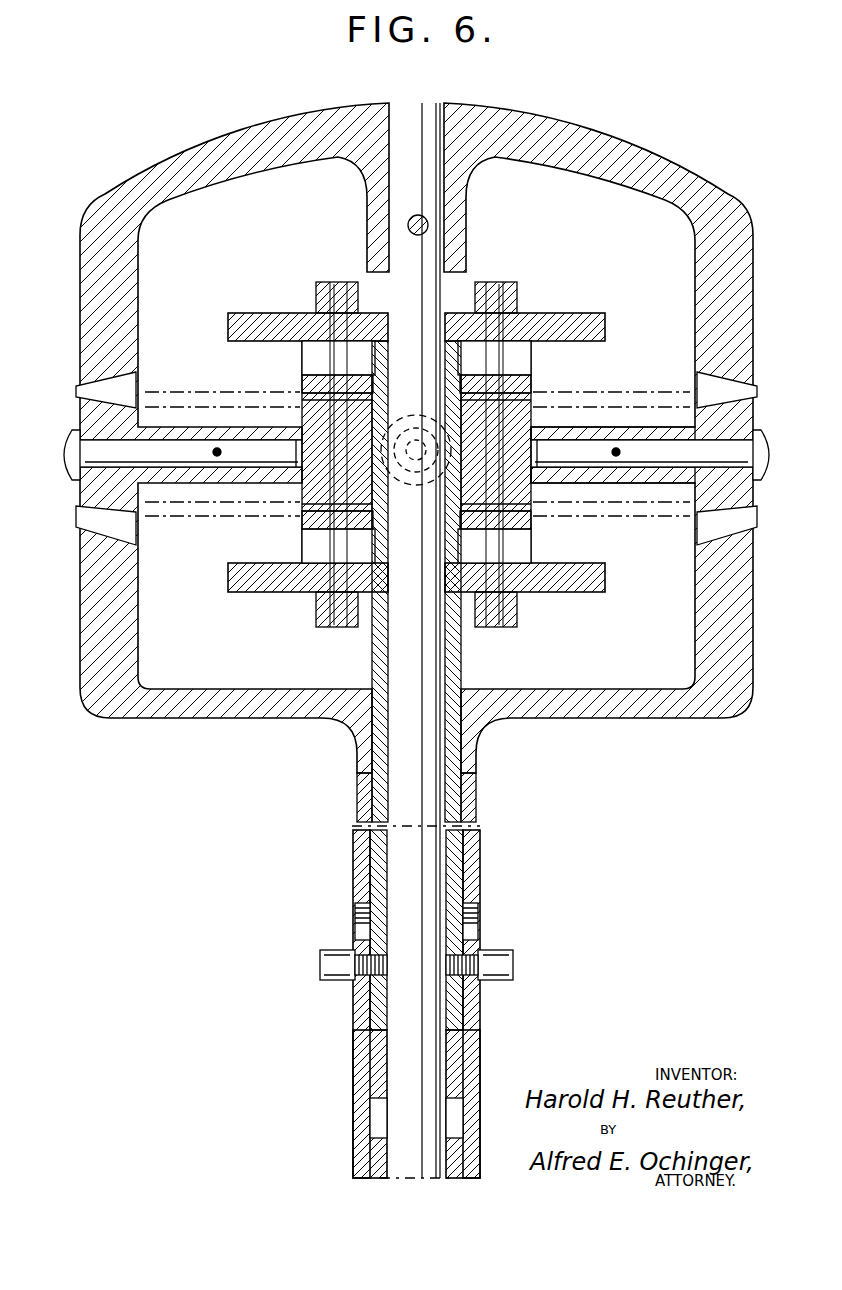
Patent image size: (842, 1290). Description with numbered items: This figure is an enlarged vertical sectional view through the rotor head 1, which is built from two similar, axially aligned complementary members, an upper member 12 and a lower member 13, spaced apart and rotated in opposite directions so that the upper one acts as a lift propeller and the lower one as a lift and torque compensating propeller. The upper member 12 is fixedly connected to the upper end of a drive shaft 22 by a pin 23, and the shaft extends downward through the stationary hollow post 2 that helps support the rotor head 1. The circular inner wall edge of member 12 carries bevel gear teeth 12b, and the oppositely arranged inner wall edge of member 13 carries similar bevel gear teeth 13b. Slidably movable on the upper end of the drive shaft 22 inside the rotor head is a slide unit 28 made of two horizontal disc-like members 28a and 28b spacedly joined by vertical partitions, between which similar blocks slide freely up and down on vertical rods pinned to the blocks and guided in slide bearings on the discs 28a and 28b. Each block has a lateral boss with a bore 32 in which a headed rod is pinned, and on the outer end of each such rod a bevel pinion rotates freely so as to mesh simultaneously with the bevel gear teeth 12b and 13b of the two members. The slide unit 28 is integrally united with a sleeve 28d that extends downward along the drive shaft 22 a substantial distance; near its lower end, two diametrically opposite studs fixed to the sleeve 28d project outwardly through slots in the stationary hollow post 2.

The rotor head 1 is at (652, 104).
The stationary hollow post 2 is at (474, 804).
The upper segmental member 12 is at (153, 172).
The bevel gear teeth 12b is at (665, 392).
The lower segmental member 13 is at (142, 720).
The bevel gear teeth 13b is at (660, 526).
The drive shaft 22 is at (418, 857).
The pin 23 is at (429, 222).
The slide unit 28 is at (570, 632).
The upper disc-like member 28a is at (594, 312).
The lower disc-like member 28b is at (597, 604).
The sleeve 28d is at (372, 798).
The bore 32 is at (627, 430).